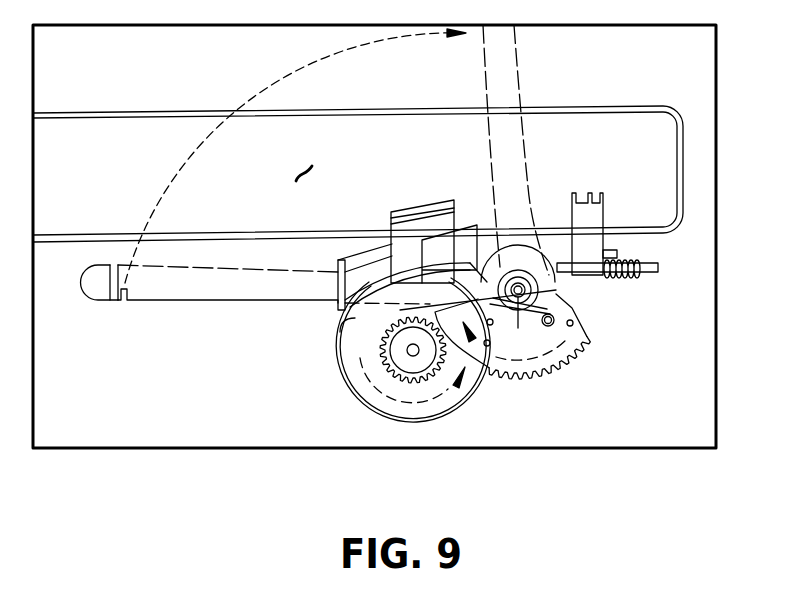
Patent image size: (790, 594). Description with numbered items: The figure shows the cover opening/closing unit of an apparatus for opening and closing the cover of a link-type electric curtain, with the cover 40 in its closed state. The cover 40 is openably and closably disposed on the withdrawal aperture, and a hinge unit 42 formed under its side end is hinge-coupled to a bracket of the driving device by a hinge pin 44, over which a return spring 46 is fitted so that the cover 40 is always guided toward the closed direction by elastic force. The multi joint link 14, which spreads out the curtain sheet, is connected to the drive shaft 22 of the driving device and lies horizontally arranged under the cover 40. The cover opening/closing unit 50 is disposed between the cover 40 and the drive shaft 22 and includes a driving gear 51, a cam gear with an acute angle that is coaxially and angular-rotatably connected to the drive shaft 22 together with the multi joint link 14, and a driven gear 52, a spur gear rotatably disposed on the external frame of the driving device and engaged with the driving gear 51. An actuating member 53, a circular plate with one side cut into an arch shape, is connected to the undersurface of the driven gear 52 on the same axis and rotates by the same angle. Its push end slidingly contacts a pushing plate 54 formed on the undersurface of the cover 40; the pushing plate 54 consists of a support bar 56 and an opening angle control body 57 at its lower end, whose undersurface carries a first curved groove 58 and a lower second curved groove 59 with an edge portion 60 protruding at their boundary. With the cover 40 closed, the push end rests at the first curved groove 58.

The multi joint link 14 is at (203, 285).
The drive shaft 22 is at (518, 328).
The cover 40 is at (667, 175).
The hinge unit 42 is at (598, 255).
The hinge pin 44 is at (655, 268).
The return spring 46 is at (630, 280).
The cover opening/closing unit 50 is at (452, 418).
The driving gear 51 is at (570, 350).
The driven gear 52 is at (412, 368).
The actuating member 53 is at (362, 388).
The pushing plate 54 is at (296, 164).
The support bar 56 is at (405, 223).
The opening angle control body 57 is at (365, 258).
The first curved groove 58 is at (437, 378).
The second curved groove 59 is at (343, 328).
The edge portion 60 is at (407, 378).